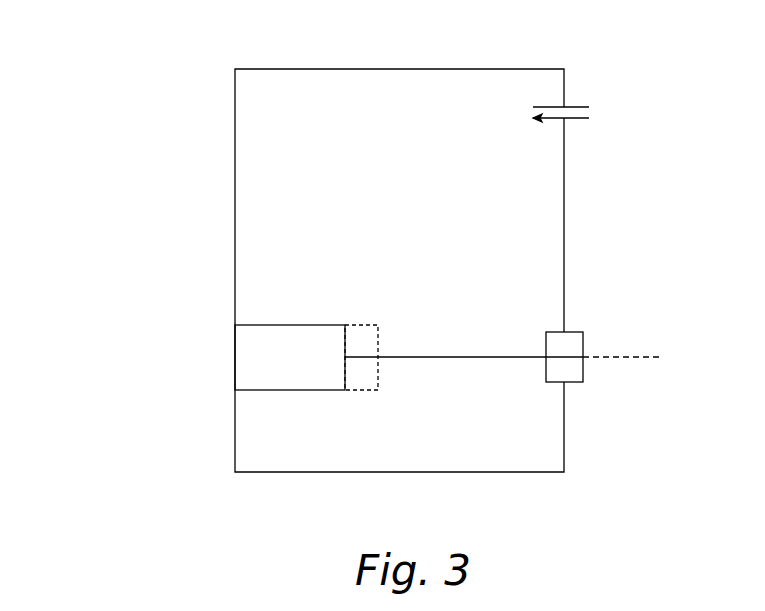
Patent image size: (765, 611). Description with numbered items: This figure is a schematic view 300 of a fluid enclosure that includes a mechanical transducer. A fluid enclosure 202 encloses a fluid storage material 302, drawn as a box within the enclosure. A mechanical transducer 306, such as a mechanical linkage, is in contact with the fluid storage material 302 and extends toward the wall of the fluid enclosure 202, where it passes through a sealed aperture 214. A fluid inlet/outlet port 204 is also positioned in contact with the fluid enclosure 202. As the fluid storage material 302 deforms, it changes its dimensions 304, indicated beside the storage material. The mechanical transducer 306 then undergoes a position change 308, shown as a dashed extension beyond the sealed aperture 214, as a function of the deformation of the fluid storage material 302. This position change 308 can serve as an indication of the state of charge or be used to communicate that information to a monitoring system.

The schematic view 300 is at (128, 128).
The fluid enclosure 202 is at (545, 66).
The fluid inlet/outlet port 204 is at (578, 106).
The fluid storage material 302 is at (291, 323).
The dimensions 304 is at (383, 293).
The mechanical transducer 306 is at (474, 355).
The sealed aperture 214 is at (577, 383).
The position change 308 is at (660, 341).